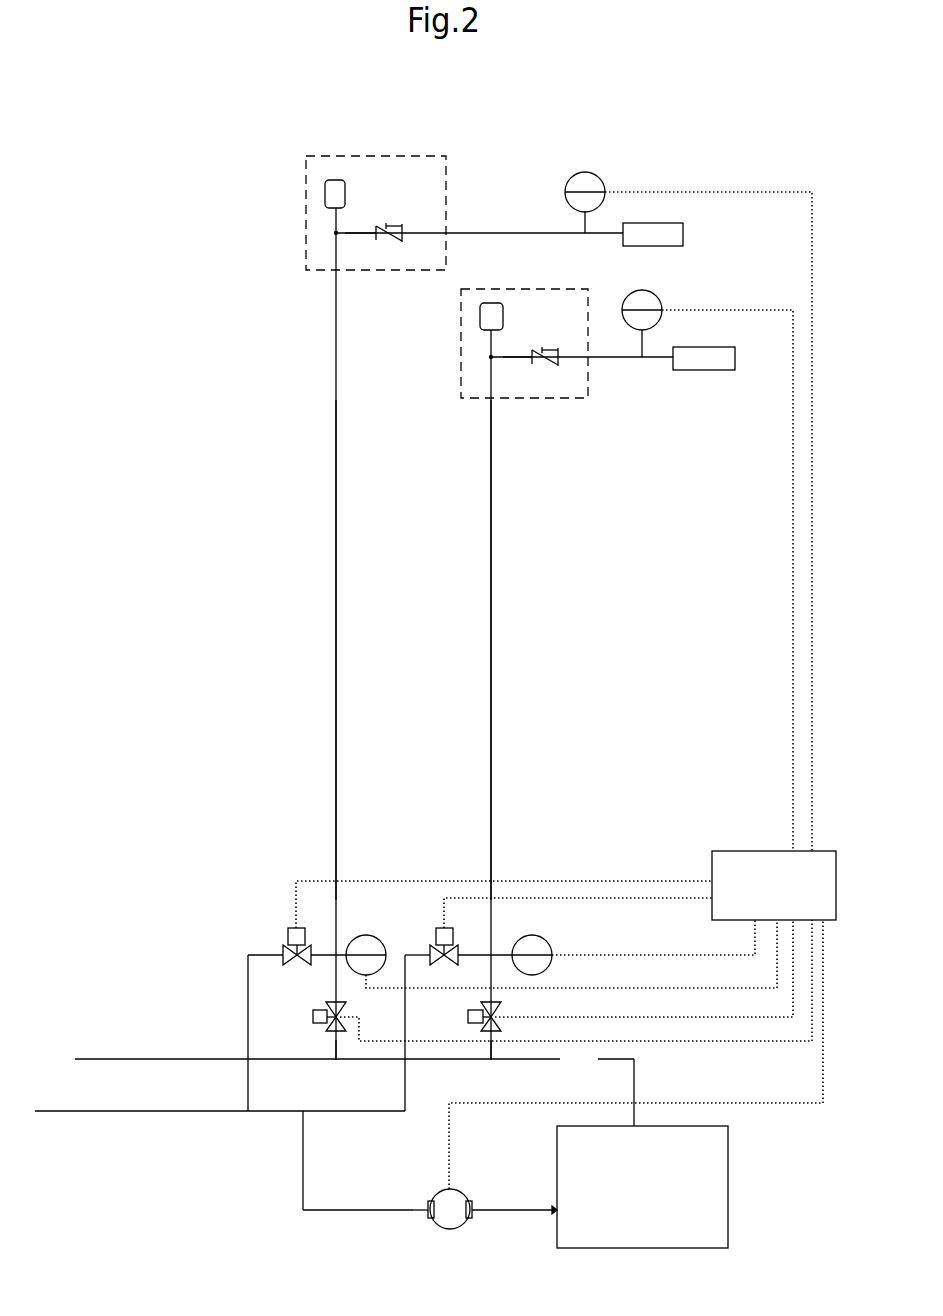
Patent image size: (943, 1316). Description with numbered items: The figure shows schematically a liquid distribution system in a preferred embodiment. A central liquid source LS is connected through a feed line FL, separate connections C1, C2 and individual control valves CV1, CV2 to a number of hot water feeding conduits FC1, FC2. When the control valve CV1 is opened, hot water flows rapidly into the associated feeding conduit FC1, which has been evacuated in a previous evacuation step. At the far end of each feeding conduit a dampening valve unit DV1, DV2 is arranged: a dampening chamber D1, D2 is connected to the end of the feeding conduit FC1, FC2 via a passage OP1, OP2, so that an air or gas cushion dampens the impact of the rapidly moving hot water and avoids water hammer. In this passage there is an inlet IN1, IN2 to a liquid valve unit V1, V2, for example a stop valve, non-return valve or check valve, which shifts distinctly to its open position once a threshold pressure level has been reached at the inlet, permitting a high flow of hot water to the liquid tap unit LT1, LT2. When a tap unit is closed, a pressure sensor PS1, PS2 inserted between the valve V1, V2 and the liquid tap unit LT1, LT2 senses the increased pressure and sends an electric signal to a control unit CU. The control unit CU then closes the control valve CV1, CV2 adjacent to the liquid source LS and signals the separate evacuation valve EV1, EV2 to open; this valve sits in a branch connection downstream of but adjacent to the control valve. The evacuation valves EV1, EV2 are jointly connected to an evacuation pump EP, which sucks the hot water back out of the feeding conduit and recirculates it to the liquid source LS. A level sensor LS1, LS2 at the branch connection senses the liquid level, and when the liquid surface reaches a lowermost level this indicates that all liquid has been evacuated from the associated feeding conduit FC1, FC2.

The dampening valve unit DV2 is at (376, 197).
The dampening chamber D2 is at (356, 197).
The passage OP2 is at (337, 233).
The liquid valve unit V2 is at (392, 247).
The inlet IN2 is at (357, 233).
The pressure sensor PS2 is at (686, 499).
The liquid tap unit LT2 is at (679, 236).
The dampening valve unit DV1 is at (526, 330).
The dampening chamber D1 is at (511, 320).
The passage OP1 is at (492, 357).
The liquid valve unit V1 is at (549, 371).
The inlet IN1 is at (512, 357).
The pressure sensor PS1 is at (706, 557).
The liquid tap unit LT1 is at (727, 360).
The feeding conduit FC2 is at (337, 650).
The feeding conduit FC1 is at (492, 650).
The control unit CU is at (774, 885).
The evacuation valve EV2 is at (472, 923).
The level sensor LS2 is at (558, 946).
The evacuation valve EV1 is at (552, 931).
The level sensor LS1 is at (631, 940).
The control valve CV2 is at (535, 980).
The control valve CV1 is at (603, 975).
The connection C2 is at (336, 1060).
The connection C1 is at (491, 1060).
The feed line FL is at (354, 1086).
The liquid source LS is at (642, 1187).
The evacuation pump EP is at (618, 1089).